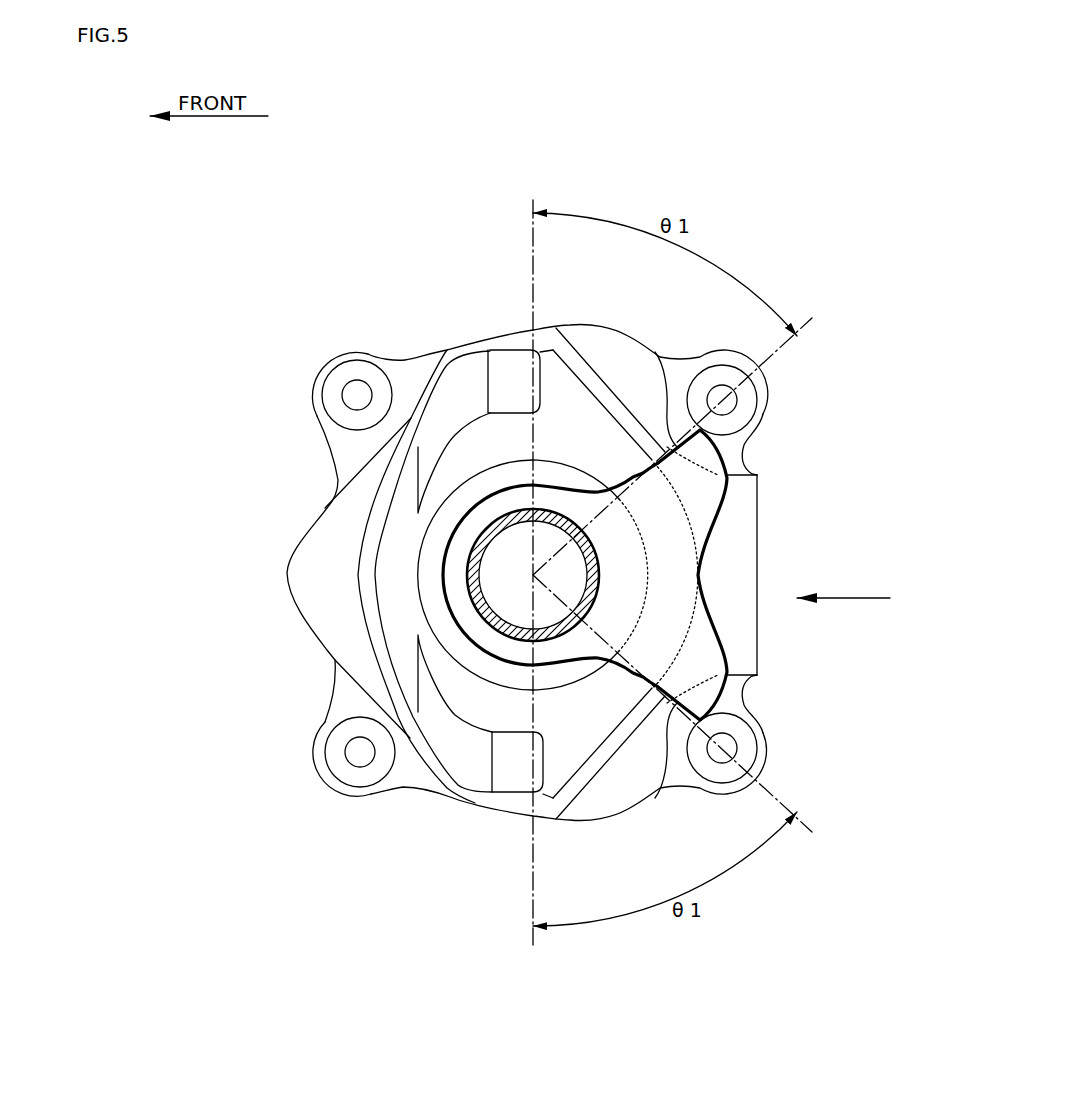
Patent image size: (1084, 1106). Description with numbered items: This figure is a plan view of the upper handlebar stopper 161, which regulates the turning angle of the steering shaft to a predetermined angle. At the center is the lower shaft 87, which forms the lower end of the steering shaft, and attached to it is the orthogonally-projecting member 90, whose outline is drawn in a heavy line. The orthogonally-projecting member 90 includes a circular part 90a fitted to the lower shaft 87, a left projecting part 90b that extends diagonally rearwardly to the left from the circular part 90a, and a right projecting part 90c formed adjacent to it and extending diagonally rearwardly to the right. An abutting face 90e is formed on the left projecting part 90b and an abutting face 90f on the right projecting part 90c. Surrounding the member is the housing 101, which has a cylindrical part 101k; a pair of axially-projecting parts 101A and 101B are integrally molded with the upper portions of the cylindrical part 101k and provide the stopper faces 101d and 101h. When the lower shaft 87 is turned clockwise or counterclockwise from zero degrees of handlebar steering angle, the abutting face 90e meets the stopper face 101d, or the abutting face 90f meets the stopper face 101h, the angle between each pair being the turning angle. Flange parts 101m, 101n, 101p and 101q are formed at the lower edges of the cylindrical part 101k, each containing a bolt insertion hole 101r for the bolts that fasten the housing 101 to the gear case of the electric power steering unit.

The lower shaft 87 is at (553, 512).
The orthogonally-projecting member 90 is at (710, 538).
The circular part 90a is at (450, 567).
The left projecting part 90b is at (707, 652).
The right projecting part 90c is at (712, 488).
The abutting face 90e is at (668, 742).
The abutting face 90f is at (668, 408).
The housing 101 is at (449, 337).
The axially-projecting part 101A is at (501, 794).
The axially-projecting part 101B is at (502, 348).
The stopper face 101d is at (568, 800).
The stopper face 101h is at (587, 323).
The cylindrical part 101k is at (367, 520).
The flange part 101m is at (406, 777).
The flange part 101n is at (735, 698).
The flange part 101p is at (737, 446).
The flange part 101q is at (402, 363).
The bolt insertion hole 101r is at (348, 392).
The upper handlebar stopper 161 is at (862, 597).